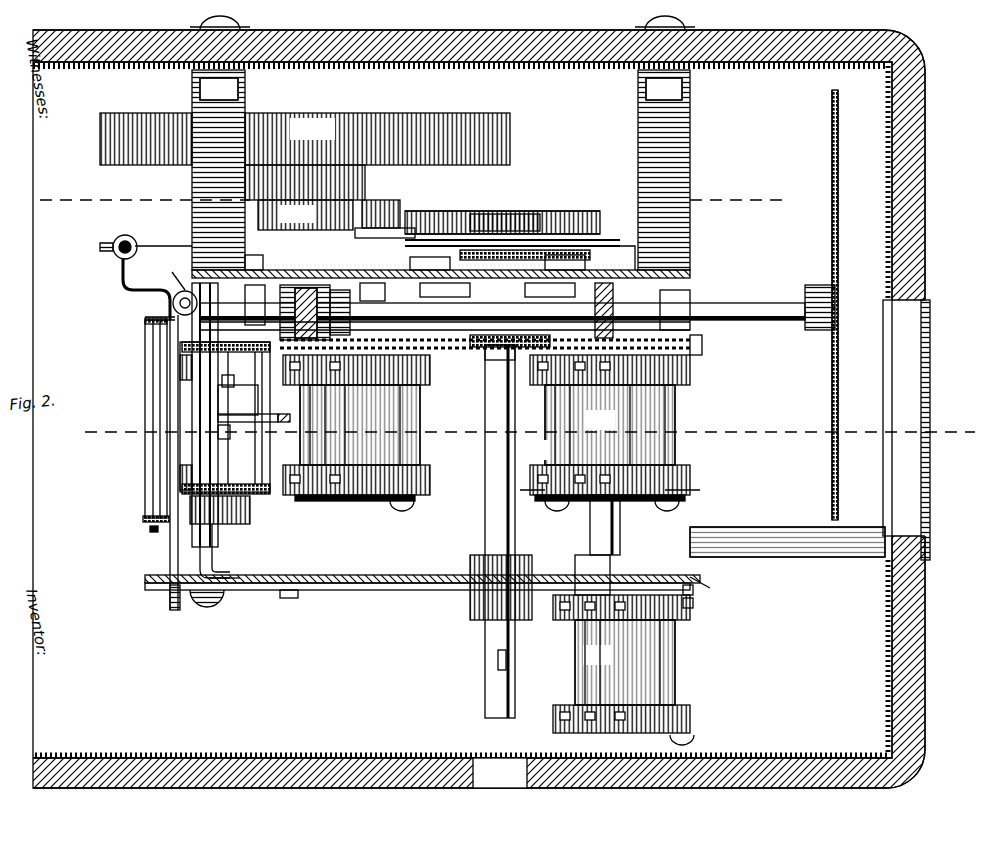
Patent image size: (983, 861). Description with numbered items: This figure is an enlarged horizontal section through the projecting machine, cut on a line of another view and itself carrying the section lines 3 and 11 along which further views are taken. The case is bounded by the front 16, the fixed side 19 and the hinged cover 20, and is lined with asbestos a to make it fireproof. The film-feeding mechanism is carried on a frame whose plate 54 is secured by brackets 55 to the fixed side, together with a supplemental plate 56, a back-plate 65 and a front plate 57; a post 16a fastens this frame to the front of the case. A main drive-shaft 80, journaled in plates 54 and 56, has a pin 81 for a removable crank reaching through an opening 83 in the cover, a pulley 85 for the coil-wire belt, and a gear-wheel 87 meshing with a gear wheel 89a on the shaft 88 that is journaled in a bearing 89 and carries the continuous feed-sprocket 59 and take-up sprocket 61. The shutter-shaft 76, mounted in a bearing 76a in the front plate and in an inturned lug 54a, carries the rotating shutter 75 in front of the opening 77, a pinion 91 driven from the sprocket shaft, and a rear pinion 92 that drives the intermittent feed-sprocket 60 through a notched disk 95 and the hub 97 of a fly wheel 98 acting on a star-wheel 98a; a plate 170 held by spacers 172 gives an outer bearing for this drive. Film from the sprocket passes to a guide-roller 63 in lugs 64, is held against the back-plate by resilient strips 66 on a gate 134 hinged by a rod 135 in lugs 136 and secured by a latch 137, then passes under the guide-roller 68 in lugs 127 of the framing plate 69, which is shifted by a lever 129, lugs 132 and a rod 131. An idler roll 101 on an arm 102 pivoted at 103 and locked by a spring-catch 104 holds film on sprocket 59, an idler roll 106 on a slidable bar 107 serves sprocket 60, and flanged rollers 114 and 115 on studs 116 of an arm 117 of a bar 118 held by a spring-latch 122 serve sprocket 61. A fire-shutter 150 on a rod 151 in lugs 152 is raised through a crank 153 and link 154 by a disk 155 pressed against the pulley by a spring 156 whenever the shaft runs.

The section line 3— 3 is at (524, 435).
The section line 11— 11 is at (414, 203).
The front 16 is at (925, 212).
The post 16a is at (823, 558).
The fixed side 19 is at (424, 55).
The cover 20 is at (220, 758).
The asbestos lining a is at (885, 217).
The plate 54 is at (680, 258).
The inturned lug 54a is at (260, 261).
The brackets 55 is at (685, 165).
The supplemental plate 56 is at (403, 583).
The front plate 57 is at (697, 527).
The continuous feed-sprocket 59 is at (623, 670).
The intermittent feed-sprocket 60 is at (356, 433).
The continuous take-up sprocket 61 is at (610, 433).
The guide-roller 63 is at (200, 420).
The lugs 64 is at (192, 518).
The back-plate 65 is at (212, 552).
The resilient strips 66 is at (182, 480).
The guide-roller 68 is at (262, 480).
The framing plate 69 is at (235, 570).
The rotating shutter 75 is at (838, 195).
The shutter-shaft 76 is at (748, 320).
The bearing 76a is at (690, 293).
The opening 77 is at (906, 430).
The main drive-shaft 80 is at (485, 516).
The pin 81 is at (495, 662).
The opening 83 is at (494, 768).
The pulley 85 is at (520, 214).
The gear-wheel 87 is at (482, 352).
The shaft 88 is at (622, 525).
The bearing 89 is at (630, 552).
The gear wheel 89a is at (695, 360).
The pinion 91 is at (614, 268).
The pinion 92 is at (297, 312).
The notched disk 95 is at (305, 215).
The hub 97 is at (360, 182).
The fly wheel 98 is at (305, 139).
The star-wheel 98a is at (395, 202).
The idler roll 101 is at (680, 672).
The arm 102 is at (693, 592).
The pivot 103 is at (693, 605).
The spring-catch 104 is at (705, 583).
The idler roll 106 is at (410, 420).
The slidable bar 107 is at (470, 293).
The flanged roller 114 is at (690, 410).
The flanged roller 115 is at (538, 442).
The studs 116 is at (680, 500).
The arm 117 is at (538, 360).
The bar 118 is at (538, 293).
The spring-latch 122 is at (612, 221).
The lugs 127 is at (250, 520).
The lever 129 is at (262, 423).
The rod 131 is at (232, 432).
The lugs 132 is at (238, 380).
The gate 134 is at (170, 455).
The rod 135 is at (172, 272).
The lugs 136 is at (178, 292).
The latch 137 is at (253, 590).
The fire-shutter 150 is at (146, 363).
The rod 151 is at (146, 318).
The lugs 152 is at (146, 322).
The crank 153 is at (121, 285).
The link 154 is at (157, 246).
The disk 155 is at (572, 210).
The spring 156 is at (478, 232).
The plate 170 is at (312, 383).
The spacers 172 is at (392, 290).